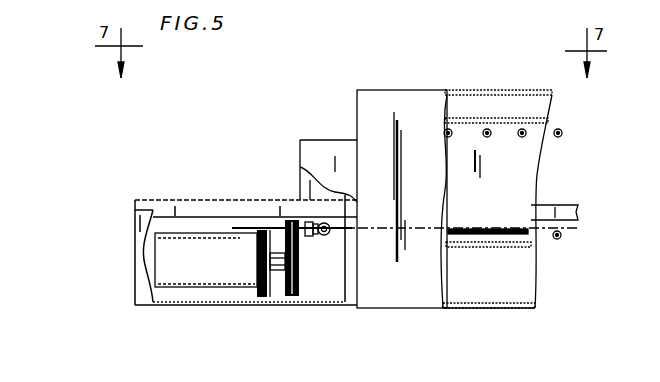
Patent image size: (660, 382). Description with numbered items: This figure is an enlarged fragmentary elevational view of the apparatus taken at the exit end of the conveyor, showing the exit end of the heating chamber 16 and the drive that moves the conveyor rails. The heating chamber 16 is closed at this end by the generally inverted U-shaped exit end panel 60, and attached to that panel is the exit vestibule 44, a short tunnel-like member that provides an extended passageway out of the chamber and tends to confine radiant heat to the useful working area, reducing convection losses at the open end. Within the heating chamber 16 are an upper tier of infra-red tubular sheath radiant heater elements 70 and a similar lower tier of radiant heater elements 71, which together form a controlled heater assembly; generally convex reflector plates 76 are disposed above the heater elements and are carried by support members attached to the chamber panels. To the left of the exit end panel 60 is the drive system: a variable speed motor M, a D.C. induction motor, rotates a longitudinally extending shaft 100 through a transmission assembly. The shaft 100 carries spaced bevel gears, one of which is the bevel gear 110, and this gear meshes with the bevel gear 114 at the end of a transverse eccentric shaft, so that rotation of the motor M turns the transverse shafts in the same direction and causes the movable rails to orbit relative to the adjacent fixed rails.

The heating chamber 16 is at (465, 90).
The exit vestibule 44 is at (305, 140).
The exit end panel 60 is at (357, 112).
The radiant heater elements 70 is at (560, 131).
The radiant heater elements 71 is at (559, 238).
The reflector plates 76 is at (510, 120).
The longitudinally extending shaft 100 is at (473, 230).
The bevel gear 110 is at (310, 238).
The bevel gear 114 is at (330, 237).
The variable speed motor M is at (195, 233).